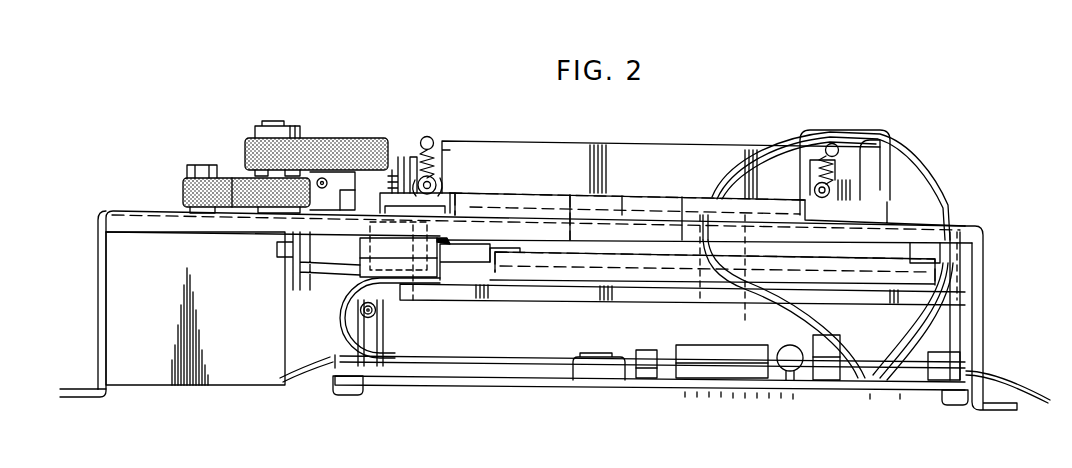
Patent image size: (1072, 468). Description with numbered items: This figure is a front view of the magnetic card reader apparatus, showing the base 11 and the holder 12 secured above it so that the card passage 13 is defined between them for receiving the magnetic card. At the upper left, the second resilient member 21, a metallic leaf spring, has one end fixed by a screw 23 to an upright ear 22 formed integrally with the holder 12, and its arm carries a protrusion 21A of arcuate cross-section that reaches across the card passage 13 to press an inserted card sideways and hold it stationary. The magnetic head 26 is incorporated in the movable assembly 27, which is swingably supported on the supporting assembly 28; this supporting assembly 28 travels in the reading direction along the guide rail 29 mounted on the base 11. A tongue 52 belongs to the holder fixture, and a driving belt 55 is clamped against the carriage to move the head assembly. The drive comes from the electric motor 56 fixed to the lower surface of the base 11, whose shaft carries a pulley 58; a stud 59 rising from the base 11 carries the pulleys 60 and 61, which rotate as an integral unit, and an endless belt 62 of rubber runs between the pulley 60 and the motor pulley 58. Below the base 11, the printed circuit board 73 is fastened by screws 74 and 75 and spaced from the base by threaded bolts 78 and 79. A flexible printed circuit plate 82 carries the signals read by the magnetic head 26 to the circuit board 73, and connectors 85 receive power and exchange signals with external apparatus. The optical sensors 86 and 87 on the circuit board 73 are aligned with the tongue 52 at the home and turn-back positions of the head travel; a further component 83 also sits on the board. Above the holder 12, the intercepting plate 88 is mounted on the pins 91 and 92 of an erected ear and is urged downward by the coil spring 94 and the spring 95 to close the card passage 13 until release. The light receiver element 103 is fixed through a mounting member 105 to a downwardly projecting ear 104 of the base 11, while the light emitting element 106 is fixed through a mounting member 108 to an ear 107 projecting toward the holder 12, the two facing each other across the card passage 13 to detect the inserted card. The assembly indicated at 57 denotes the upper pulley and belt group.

The base 11 is at (118, 212).
The holder 12 is at (565, 193).
The card passage 13 is at (623, 197).
The second resilient member 21 is at (418, 160).
The protrusion 21A is at (452, 191).
The upright ear 22 is at (409, 150).
The screw 23 is at (399, 158).
The magnetic head 26 is at (416, 272).
The movable assembly 27 is at (452, 292).
The supporting assembly 28 is at (447, 300).
The guide rail 29 is at (536, 296).
The tongue 52 is at (358, 324).
The driving belt 55 is at (624, 300).
The electric motor 56 is at (153, 376).
The roller assembly 57 is at (243, 135).
The pulley 58 is at (195, 166).
The stud 59 is at (271, 124).
The pulley 60 is at (238, 180).
The pulley 61 is at (297, 128).
The endless belt 62 is at (183, 187).
The printed circuit board 73 is at (598, 389).
The screw 74 is at (348, 396).
The screw 75 is at (955, 406).
The threaded bolt 78 is at (325, 368).
The threaded bolt 79 is at (958, 325).
The flexible printed circuit plate 82 is at (420, 372).
The connector block 83 is at (935, 379).
The connectors 85 is at (1030, 398).
The optical sensor 86 is at (379, 377).
The optical sensor 87 is at (818, 379).
The intercepting plate 88 is at (663, 150).
The pin 91 is at (436, 182).
The pin 92 is at (818, 187).
The coil spring 94 is at (437, 160).
The spring 95 is at (838, 164).
The light receiver element 103 is at (697, 292).
The downwardly projecting ear 104 is at (768, 268).
The mounting member 105 is at (742, 292).
The light emitting element 106 is at (708, 200).
The ear 107 is at (771, 194).
The mounting member 108 is at (736, 192).